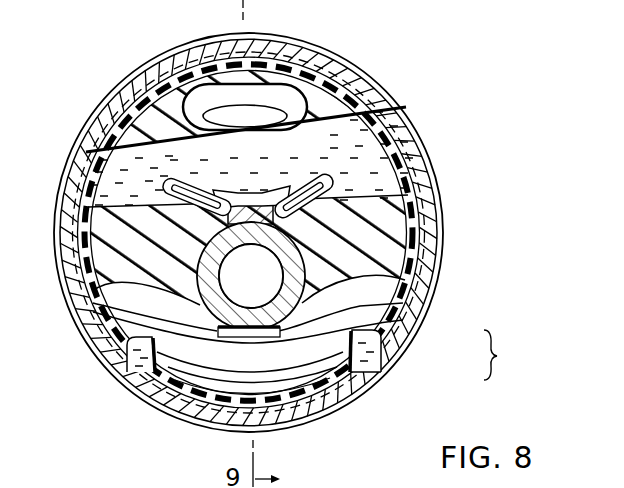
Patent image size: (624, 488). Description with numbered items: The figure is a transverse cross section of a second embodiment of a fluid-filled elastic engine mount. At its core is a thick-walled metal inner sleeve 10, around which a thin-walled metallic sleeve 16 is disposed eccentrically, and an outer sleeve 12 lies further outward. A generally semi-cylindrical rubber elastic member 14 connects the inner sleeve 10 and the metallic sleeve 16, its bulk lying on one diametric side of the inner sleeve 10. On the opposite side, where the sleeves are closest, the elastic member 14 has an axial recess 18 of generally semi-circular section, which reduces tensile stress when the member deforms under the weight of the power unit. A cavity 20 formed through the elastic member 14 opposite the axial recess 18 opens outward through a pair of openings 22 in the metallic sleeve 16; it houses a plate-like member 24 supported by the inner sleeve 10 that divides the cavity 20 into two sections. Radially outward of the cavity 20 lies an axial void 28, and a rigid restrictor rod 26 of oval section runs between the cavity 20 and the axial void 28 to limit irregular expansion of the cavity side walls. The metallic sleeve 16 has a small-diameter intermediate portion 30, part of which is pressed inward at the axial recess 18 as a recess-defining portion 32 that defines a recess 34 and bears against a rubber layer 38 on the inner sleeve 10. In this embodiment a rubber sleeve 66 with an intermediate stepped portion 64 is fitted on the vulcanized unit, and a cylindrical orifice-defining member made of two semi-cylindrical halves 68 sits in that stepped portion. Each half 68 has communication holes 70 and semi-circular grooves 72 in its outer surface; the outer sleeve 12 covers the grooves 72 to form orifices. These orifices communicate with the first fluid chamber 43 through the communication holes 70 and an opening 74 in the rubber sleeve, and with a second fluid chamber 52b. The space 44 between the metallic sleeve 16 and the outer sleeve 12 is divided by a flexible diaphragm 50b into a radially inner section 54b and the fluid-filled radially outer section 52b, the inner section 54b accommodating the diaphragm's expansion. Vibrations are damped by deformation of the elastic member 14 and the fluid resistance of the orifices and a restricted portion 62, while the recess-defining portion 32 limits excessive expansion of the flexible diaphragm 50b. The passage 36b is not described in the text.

The inner sleeve 10 is at (222, 272).
The outer sleeve 12 is at (437, 283).
The elastic member 14 is at (108, 250).
The metallic sleeve 16 is at (112, 349).
The axial recess 18 is at (117, 290).
The cavity 20 is at (251, 158).
The openings 22 is at (80, 190).
The plate-like member 24 is at (318, 185).
The restrictor rod 26 is at (215, 180).
The axial void 28 is at (218, 100).
The axially intermediate portion 30 is at (252, 105).
The recess-defining portion 32 is at (165, 372).
The recess 34 is at (365, 372).
The upper passage 36b is at (167, 90).
The rubber layer 38 is at (250, 332).
The first fluid chamber 43 is at (228, 182).
The space 44 is at (506, 355).
The flexible diaphragm 50b is at (198, 418).
The second fluid chamber 52b is at (393, 368).
The radially inner section 54b is at (377, 313).
The restricted portion 62 is at (397, 133).
The intermediate stepped portion 64 is at (405, 160).
The rubber sleeve 66 is at (66, 214).
The semi-cylindrical halves 68 is at (300, 52).
The communication holes 70 is at (78, 160).
The semi-circular grooves 72 is at (368, 85).
The opening 74 is at (83, 153).